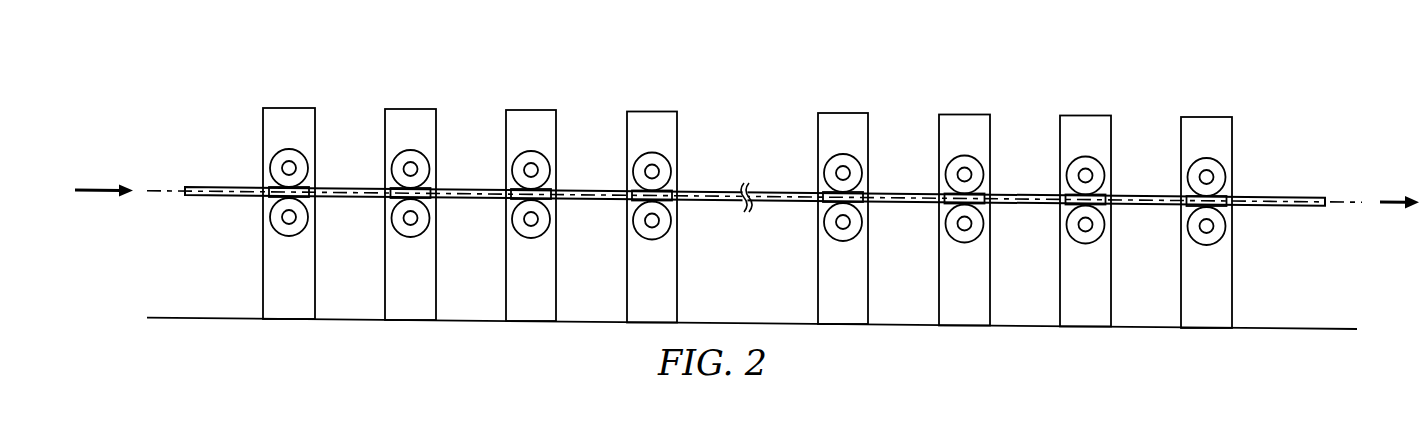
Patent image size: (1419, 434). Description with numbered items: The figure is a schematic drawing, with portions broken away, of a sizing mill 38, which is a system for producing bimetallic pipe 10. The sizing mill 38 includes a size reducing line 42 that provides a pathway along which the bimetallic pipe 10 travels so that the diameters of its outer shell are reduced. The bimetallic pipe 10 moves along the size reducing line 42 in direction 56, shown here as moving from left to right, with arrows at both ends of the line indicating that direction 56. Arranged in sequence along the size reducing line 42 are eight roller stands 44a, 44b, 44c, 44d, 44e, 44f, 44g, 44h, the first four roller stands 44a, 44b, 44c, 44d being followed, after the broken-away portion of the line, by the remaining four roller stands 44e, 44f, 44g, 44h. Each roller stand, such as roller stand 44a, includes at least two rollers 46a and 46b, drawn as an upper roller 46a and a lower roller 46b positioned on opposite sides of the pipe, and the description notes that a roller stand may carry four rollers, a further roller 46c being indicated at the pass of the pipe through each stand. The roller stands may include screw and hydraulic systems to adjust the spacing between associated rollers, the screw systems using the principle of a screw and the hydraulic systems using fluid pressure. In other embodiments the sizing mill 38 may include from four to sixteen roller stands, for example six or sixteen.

The bimetallic pipe 10 is at (220, 202).
The sizing mill 38 is at (759, 64).
The size reducing line 42 is at (1354, 200).
The roller stand 44a is at (287, 108).
The roller stand 44b is at (410, 110).
The roller stand 44c is at (530, 111).
The roller stand 44d is at (652, 112).
The roller stand 44e is at (843, 113).
The roller stand 44f is at (963, 115).
The roller stand 44g is at (1085, 116).
The roller stand 44h is at (1205, 117).
The roller 46a is at (303, 168).
The roller 46b is at (292, 232).
The roller 46c is at (302, 200).
The direction 56 is at (93, 197).